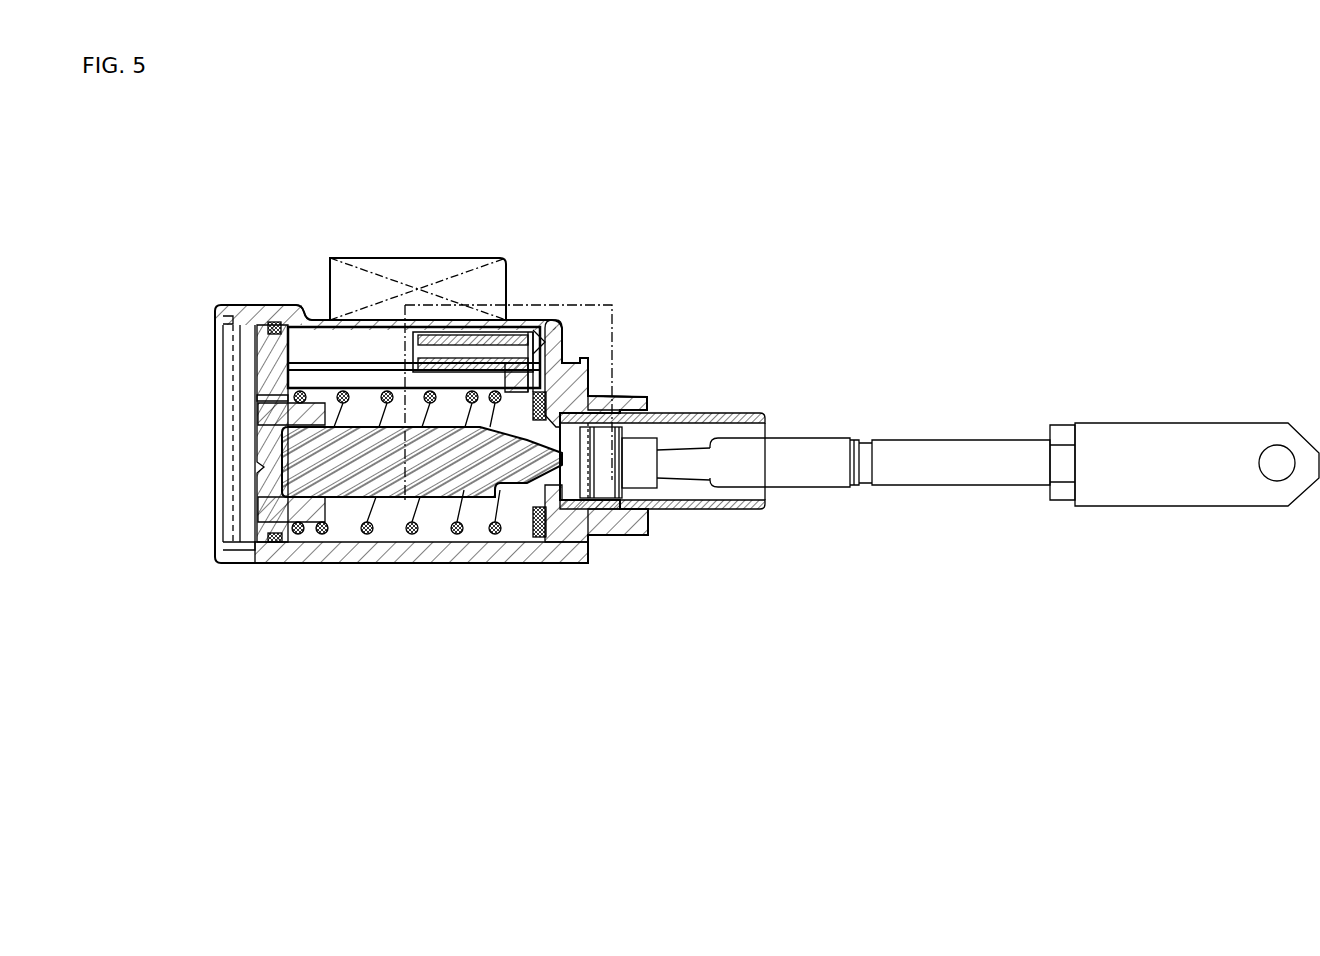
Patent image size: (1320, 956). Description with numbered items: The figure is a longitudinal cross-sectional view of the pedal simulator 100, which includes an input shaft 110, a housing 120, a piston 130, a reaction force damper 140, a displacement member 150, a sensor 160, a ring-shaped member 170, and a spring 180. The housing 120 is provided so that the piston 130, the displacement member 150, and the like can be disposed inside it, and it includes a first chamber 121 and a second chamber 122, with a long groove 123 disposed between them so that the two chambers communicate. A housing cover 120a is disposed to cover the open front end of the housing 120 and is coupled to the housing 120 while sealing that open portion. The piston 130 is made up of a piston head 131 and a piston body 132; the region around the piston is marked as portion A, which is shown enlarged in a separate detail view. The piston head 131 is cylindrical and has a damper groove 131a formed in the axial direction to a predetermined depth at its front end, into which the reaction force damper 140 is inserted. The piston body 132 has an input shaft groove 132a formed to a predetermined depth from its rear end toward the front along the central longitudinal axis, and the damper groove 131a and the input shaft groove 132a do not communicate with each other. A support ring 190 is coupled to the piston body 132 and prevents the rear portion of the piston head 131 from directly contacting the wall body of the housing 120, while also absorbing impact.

The pedal simulator 100 is at (646, 146).
The input shaft 110 is at (836, 455).
The housing 120 is at (380, 461).
The housing cover 120a is at (233, 484).
The first chamber 121 is at (365, 563).
The second chamber 122 is at (312, 317).
The long groove 123 is at (257, 373).
The piston 130 is at (665, 486).
The piston head 131 is at (616, 462).
The damper groove 131a is at (627, 393).
The piston body 132 is at (677, 472).
The input shaft groove 132a is at (688, 430).
The reaction force damper 140 is at (290, 563).
The displacement member 150 is at (485, 298).
The sensor 160 is at (418, 257).
The ring-shaped member 170 is at (513, 545).
The spring 180 is at (410, 563).
The support ring 190 is at (613, 318).
The portion A is at (590, 305).